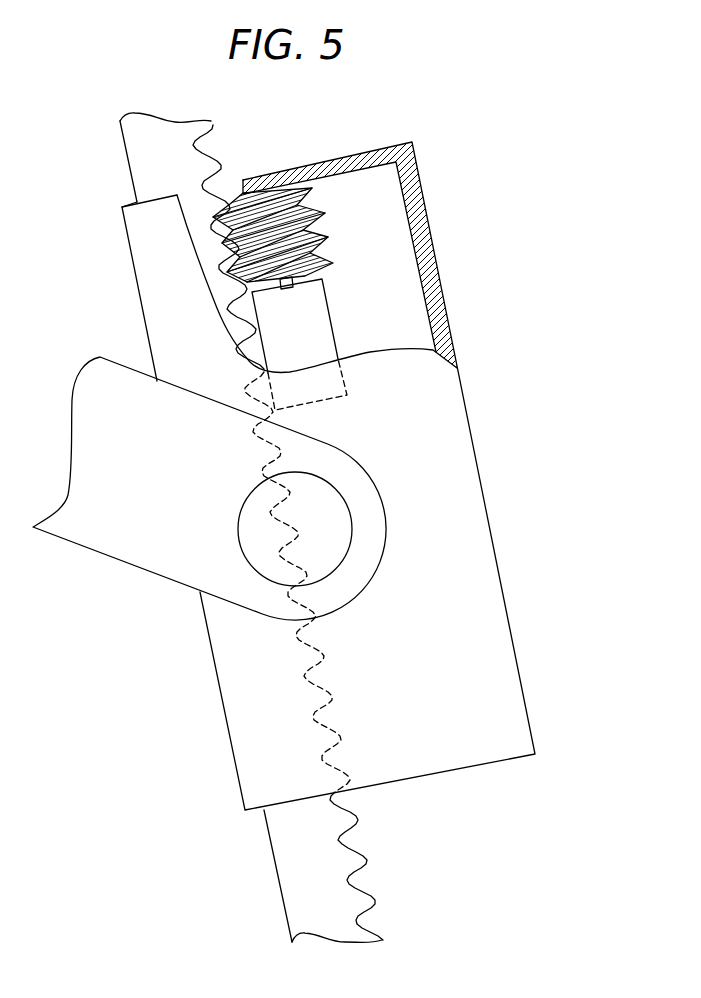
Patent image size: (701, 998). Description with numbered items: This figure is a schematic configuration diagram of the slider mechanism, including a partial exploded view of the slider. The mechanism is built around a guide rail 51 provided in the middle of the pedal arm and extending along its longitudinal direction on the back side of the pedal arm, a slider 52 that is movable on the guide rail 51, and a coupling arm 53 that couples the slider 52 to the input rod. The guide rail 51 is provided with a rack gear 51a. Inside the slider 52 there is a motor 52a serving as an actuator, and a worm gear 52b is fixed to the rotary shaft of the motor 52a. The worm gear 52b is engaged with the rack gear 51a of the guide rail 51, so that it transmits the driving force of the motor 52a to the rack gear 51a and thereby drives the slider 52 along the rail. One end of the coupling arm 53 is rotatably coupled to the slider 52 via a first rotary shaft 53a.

The guide rail 51 is at (278, 877).
The rack gear 51a is at (367, 858).
The slider 52 is at (459, 371).
The motor 52a is at (326, 302).
The worm gear 52b is at (312, 236).
The coupling arm 53 is at (112, 558).
The first rotary shaft 53a is at (270, 555).